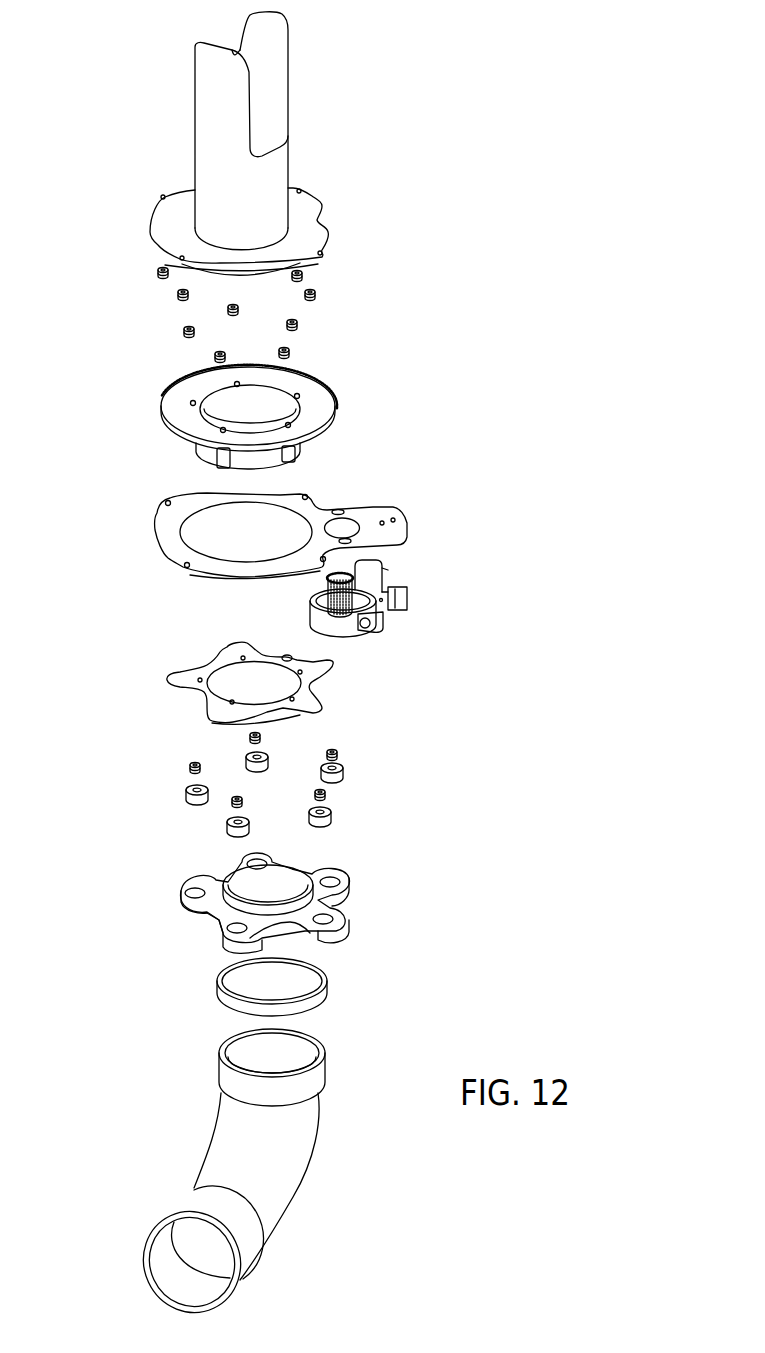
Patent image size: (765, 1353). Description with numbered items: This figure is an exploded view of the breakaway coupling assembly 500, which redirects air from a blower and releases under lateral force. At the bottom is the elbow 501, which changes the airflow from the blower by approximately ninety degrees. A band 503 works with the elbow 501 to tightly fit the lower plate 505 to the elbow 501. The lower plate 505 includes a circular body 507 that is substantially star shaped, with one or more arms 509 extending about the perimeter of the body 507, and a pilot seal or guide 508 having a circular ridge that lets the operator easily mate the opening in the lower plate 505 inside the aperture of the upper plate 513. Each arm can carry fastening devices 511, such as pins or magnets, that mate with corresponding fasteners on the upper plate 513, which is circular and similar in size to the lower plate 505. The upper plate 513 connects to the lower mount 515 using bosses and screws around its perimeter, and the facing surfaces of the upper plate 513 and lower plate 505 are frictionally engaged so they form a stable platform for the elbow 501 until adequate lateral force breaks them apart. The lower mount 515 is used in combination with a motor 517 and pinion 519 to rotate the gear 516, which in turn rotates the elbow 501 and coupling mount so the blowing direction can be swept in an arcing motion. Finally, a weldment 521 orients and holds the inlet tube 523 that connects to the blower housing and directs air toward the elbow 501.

The breakaway coupling assembly 500 is at (101, 1117).
The elbow 501 is at (297, 1167).
The band 503 is at (318, 1000).
The lower plate 505 is at (284, 910).
The circular body 507 is at (220, 906).
The pilot seal or guide 508 is at (234, 927).
The arms 509 is at (337, 922).
The fastening devices 511 is at (334, 815).
The upper plate 513 is at (318, 668).
The lower mount 515 is at (388, 508).
The gear 516 is at (322, 421).
The motor 517 is at (384, 576).
The pinion 519 is at (392, 600).
The weldment 521 is at (312, 238).
The outlet tube 523 is at (278, 168).